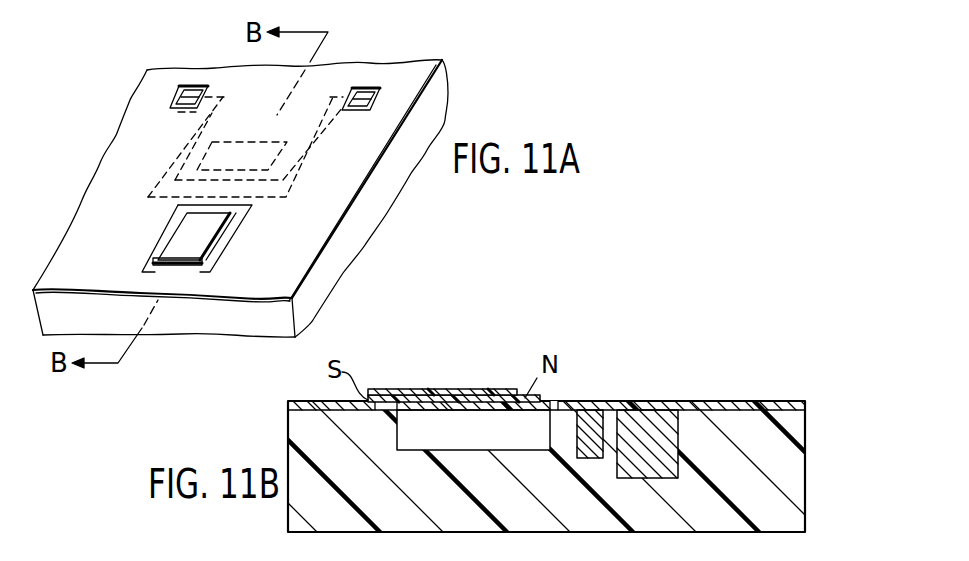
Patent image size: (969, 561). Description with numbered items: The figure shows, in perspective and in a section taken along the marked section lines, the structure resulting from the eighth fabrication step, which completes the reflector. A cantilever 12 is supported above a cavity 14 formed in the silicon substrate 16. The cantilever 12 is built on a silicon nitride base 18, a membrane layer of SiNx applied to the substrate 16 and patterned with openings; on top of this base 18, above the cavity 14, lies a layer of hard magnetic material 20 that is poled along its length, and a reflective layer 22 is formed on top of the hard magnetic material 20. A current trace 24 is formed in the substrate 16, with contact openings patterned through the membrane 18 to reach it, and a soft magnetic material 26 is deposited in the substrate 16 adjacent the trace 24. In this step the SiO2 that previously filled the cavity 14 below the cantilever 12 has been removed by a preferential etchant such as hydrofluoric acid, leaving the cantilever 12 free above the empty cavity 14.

In FIG. 11A, the cantilever 12 is at (202, 246).
In FIG. 11B, the cantilever 12 is at (454, 356).
In FIG. 11B, the cavity 14 is at (524, 438).
In FIG. 11A, the silicon substrate 16 is at (338, 250).
In FIG. 11B, the silicon substrate 16 is at (797, 487).
In FIG. 11A, the silicon nitride base 18 is at (349, 178).
In FIG. 11B, the silicon nitride base 18 is at (740, 400).
In FIG. 11A, the layer of hard magnetic material 20 is at (182, 266).
In FIG. 11B, the layer of hard magnetic material 20 is at (393, 396).
In FIG. 11A, the reflective layer 22 is at (178, 242).
In FIG. 11B, the reflective layer 22 is at (447, 379).
In FIG. 11A, the current trace 24 is at (366, 92).
In FIG. 11B, the current trace 24 is at (592, 453).
In FIG. 11B, the soft magnetic material 26 is at (667, 467).